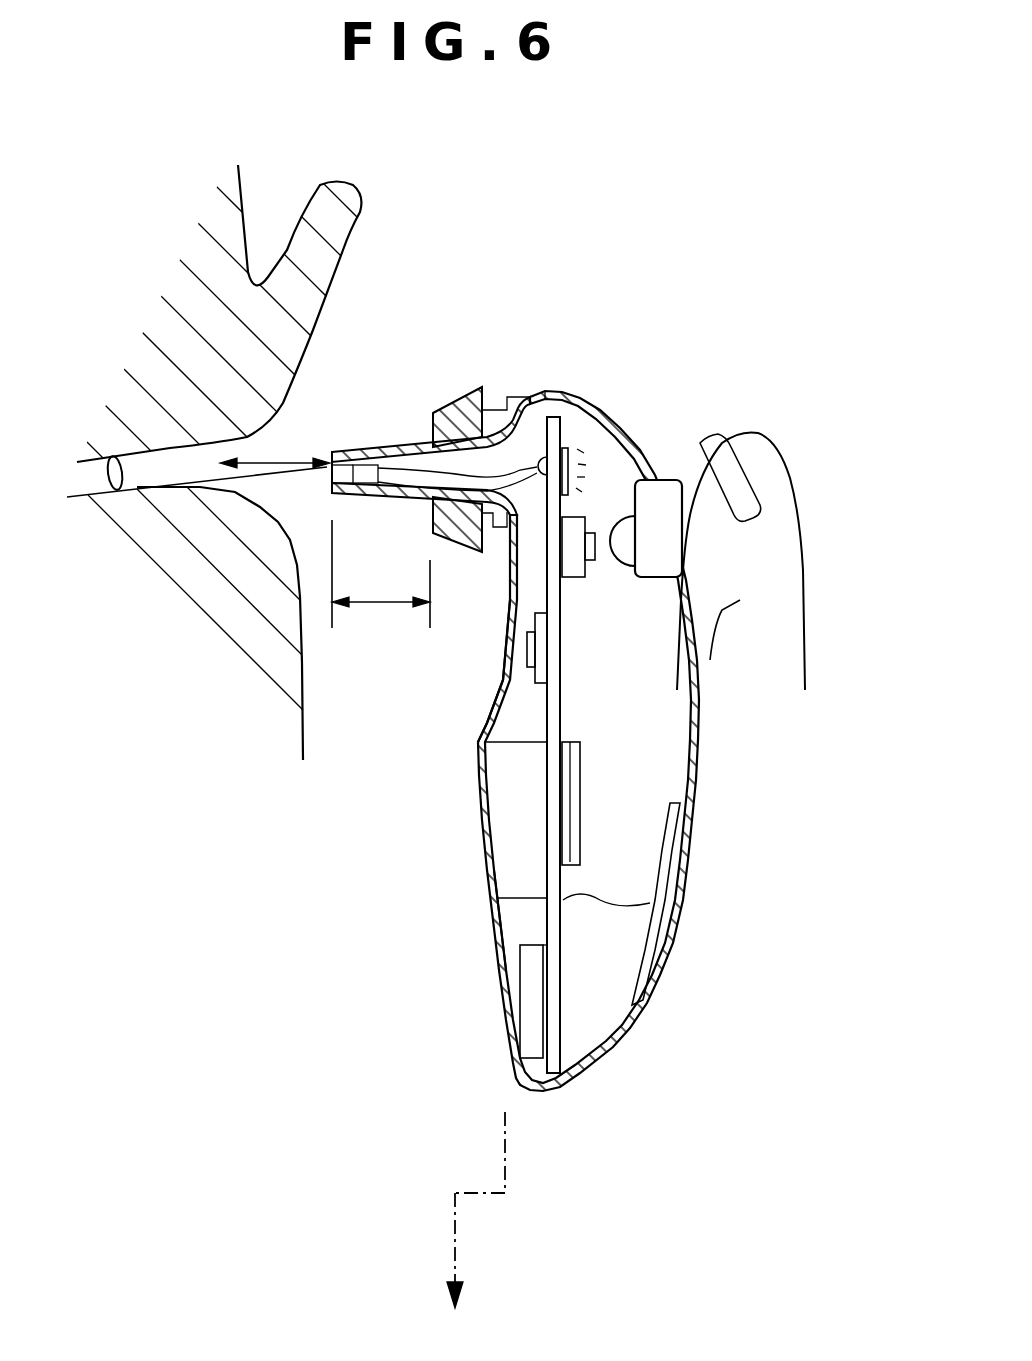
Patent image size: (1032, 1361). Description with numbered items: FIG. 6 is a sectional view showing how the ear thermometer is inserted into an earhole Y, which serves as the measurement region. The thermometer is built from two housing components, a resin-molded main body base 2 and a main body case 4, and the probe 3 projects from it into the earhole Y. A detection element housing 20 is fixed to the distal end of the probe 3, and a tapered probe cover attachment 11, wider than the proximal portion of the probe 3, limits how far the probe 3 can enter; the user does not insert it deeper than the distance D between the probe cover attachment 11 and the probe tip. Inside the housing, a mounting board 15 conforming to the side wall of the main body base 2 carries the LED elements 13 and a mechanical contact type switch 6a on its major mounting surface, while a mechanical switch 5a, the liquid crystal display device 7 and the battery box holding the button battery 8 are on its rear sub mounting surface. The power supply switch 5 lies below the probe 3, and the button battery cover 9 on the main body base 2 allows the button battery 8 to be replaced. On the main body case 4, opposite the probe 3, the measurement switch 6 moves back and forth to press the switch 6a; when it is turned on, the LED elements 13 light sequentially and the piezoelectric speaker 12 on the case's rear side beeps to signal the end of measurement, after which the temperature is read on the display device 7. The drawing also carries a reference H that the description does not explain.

The main body base 2 is at (490, 700).
The probe 3 is at (337, 452).
The main body case 4 is at (688, 742).
The power supply switch 5 is at (505, 657).
The mechanical switch 5a is at (533, 647).
The measurement switch 6 is at (656, 500).
The mechanical contact type switch 6a is at (577, 577).
The liquid crystal display device 7 is at (488, 852).
The button battery 8 is at (530, 1010).
The button battery cover 9 is at (493, 947).
The probe cover attachment 11 is at (470, 410).
The piezoelectric speaker 12 is at (662, 810).
The LED elements 13 is at (567, 450).
The mounting board 15 is at (553, 417).
The detection element housing 20 is at (367, 472).
The earhole Y is at (170, 478).
The distance D is at (385, 604).
The direction H is at (507, 1167).